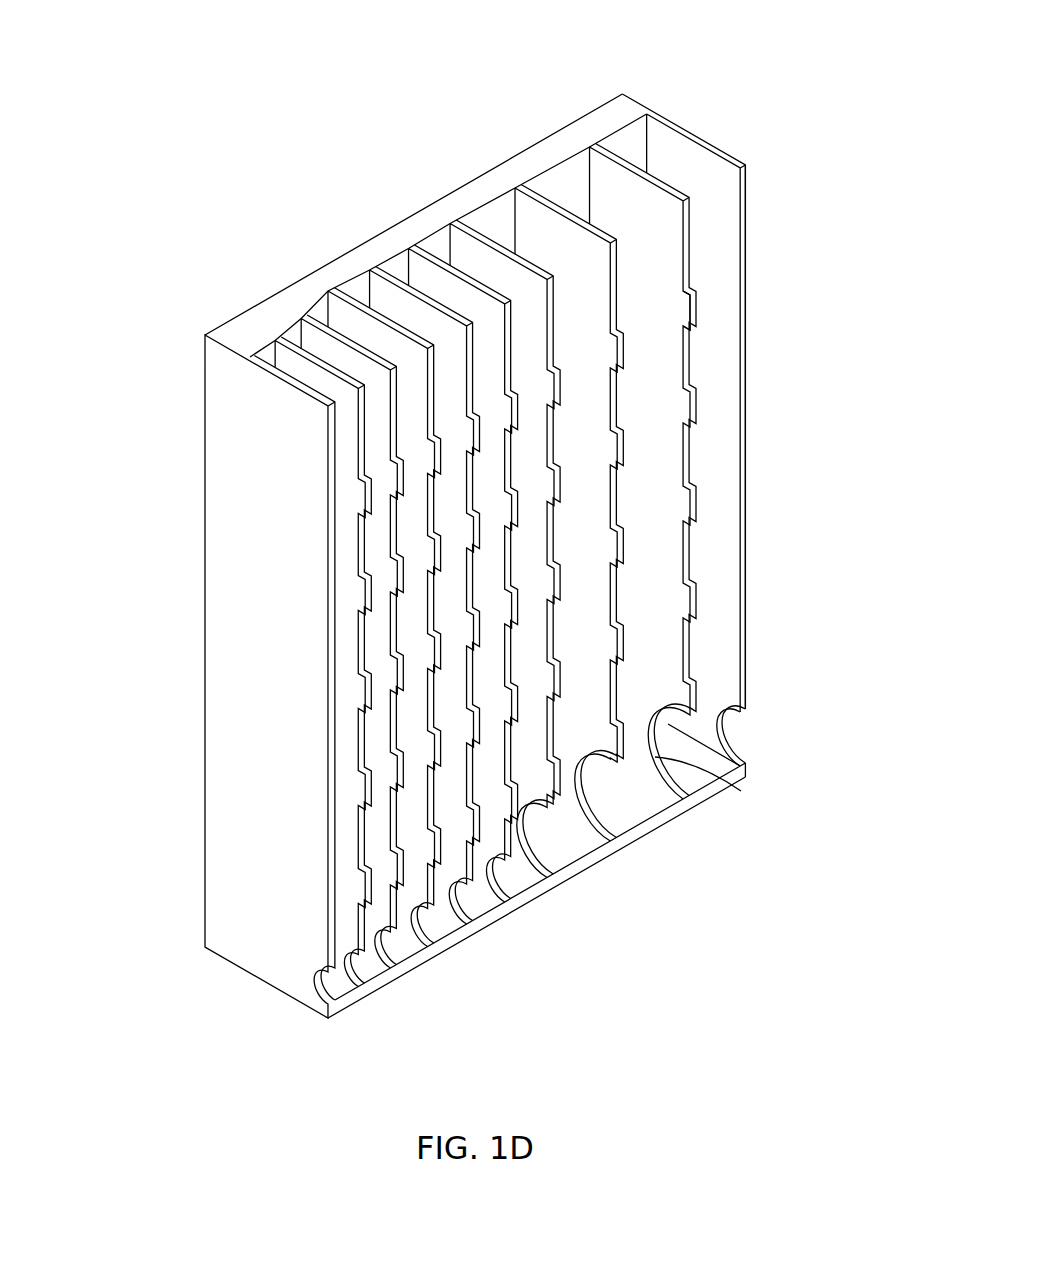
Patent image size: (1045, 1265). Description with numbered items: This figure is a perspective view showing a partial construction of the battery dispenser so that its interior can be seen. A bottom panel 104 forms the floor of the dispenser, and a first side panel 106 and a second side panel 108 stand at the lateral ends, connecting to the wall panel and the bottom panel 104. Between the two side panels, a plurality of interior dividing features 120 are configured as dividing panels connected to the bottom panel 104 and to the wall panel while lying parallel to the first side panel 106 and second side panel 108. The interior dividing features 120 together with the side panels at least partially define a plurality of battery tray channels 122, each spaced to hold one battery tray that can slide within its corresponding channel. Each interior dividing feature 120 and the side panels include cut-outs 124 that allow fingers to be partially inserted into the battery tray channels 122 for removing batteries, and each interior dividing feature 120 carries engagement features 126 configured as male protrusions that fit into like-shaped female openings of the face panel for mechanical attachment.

The bottom panel 104 is at (590, 880).
The first side panel 106 is at (750, 476).
The second side panel 108 is at (245, 633).
The interior dividing features 120 is at (650, 175).
The battery tray channels 122 is at (690, 163).
The cut-outs 124 is at (733, 738).
The engagement features 126 is at (690, 316).